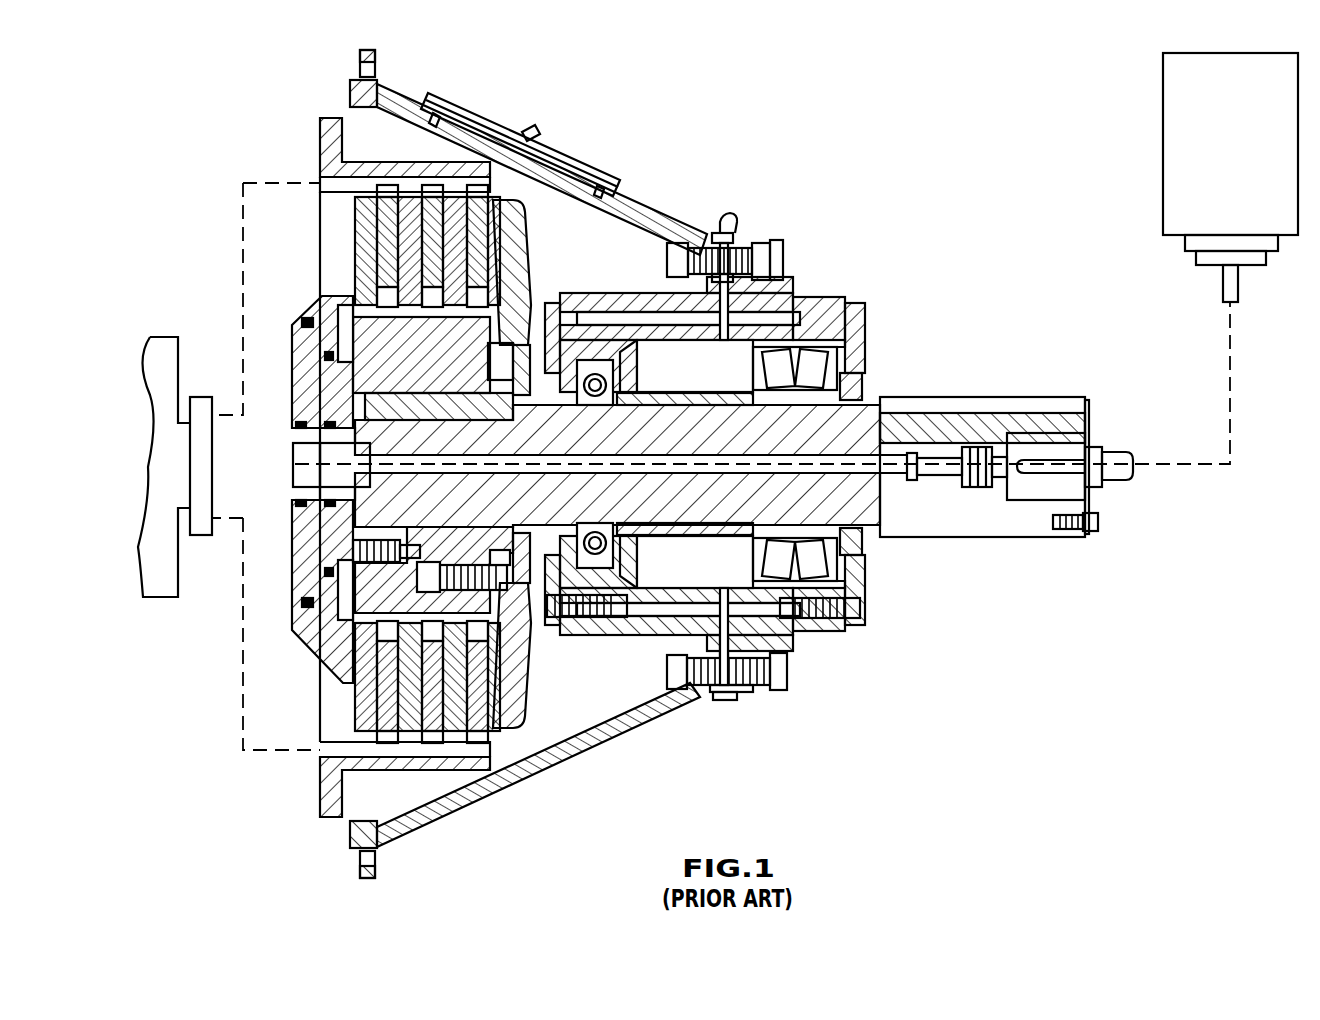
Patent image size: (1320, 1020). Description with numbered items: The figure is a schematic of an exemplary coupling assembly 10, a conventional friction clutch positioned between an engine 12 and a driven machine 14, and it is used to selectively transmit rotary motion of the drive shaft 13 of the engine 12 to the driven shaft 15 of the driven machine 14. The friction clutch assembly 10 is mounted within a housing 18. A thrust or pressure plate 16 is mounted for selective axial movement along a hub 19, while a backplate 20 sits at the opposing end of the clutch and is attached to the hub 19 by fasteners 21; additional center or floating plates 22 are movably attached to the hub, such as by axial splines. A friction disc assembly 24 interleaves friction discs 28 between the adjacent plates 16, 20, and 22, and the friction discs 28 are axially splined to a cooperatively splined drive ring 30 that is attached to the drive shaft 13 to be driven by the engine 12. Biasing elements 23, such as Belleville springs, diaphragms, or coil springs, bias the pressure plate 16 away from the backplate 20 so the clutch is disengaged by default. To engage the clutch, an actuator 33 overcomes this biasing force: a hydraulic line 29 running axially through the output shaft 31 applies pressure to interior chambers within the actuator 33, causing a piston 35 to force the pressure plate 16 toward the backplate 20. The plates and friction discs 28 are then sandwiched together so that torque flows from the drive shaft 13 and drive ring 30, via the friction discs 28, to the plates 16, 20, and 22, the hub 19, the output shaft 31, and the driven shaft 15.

The coupling assembly 10 is at (494, 100).
The engine 12 is at (160, 337).
The drive shaft 13 is at (198, 397).
The driven machine 14 is at (1163, 92).
The driven shaft 15 is at (1223, 282).
The pressure plate 16 is at (355, 212).
The housing 18 is at (668, 225).
The hub 19 is at (517, 522).
The backplate 20 is at (508, 688).
The fasteners 21 is at (523, 622).
The floating plates 22 is at (407, 236).
The biasing elements 23 is at (478, 626).
The friction disc assembly 24 is at (383, 155).
The friction discs 28 is at (440, 650).
The hydraulic line 29 is at (848, 440).
The drive ring 30 is at (320, 765).
The output shaft 31 is at (818, 538).
The actuator 33 is at (282, 324).
The piston 35 is at (318, 272).